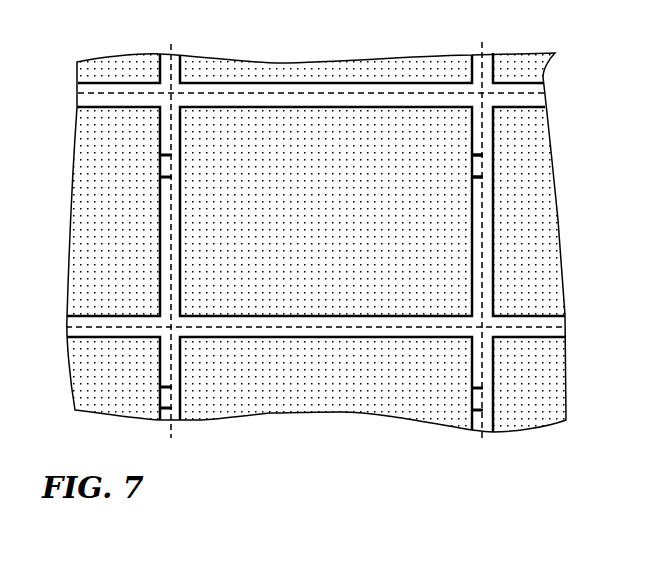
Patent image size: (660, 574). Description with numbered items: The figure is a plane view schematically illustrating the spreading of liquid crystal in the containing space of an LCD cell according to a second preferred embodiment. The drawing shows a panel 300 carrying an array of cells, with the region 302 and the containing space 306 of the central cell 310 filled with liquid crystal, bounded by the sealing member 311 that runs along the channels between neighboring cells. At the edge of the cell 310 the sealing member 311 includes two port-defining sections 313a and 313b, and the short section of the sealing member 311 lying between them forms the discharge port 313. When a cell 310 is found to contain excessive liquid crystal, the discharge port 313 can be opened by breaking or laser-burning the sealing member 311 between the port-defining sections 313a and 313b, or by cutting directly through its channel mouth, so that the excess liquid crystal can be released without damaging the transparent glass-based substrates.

The pixel array substrate 300 is at (533, 428).
The pixel electrode 302 is at (274, 250).
The pixel region 306 is at (346, 216).
The LCD cell 310 is at (243, 295).
The sealing member 311 is at (358, 316).
The discharge port 313 is at (477, 167).
The port-defining section 313a is at (480, 155).
The port-defining section 313b is at (482, 178).